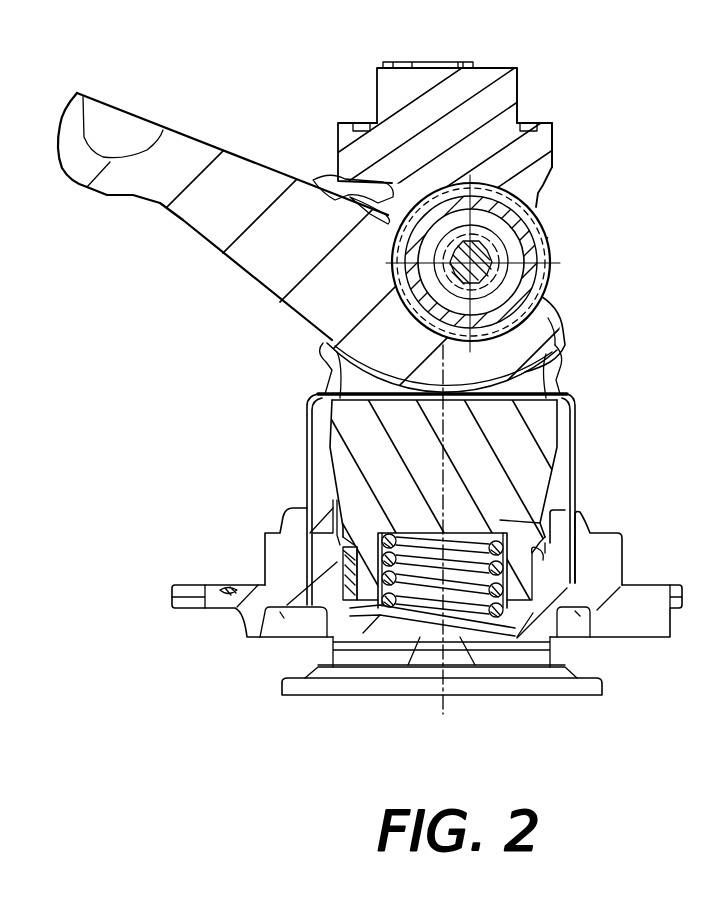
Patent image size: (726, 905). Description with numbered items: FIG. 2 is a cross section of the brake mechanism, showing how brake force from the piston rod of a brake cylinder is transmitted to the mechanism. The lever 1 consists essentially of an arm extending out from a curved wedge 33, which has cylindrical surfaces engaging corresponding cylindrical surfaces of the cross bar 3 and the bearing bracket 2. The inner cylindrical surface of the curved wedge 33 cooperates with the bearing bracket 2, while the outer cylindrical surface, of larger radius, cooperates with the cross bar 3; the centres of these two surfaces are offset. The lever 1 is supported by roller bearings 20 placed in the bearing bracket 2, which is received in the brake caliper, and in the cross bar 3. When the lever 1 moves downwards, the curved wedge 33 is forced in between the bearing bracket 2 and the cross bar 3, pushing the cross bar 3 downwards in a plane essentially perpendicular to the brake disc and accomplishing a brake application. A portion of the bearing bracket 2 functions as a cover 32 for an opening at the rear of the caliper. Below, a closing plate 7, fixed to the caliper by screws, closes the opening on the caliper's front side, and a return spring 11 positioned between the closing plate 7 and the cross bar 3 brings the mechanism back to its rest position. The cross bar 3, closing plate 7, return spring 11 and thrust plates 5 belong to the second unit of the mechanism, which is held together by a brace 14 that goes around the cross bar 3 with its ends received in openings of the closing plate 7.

The lever 1 is at (206, 220).
The bearing bracket 2 is at (392, 148).
The cross bar 3 is at (543, 460).
The thrust plates 5 is at (548, 688).
The closing plate 7 is at (248, 630).
The return spring 11 is at (455, 630).
The brace 14 is at (307, 450).
The roller bearings 20 is at (547, 362).
The cover 32 is at (492, 86).
The curved wedge 33 is at (550, 312).